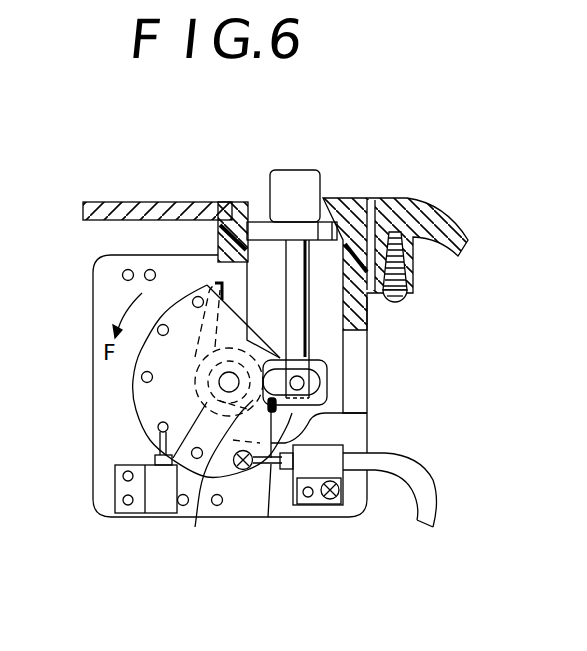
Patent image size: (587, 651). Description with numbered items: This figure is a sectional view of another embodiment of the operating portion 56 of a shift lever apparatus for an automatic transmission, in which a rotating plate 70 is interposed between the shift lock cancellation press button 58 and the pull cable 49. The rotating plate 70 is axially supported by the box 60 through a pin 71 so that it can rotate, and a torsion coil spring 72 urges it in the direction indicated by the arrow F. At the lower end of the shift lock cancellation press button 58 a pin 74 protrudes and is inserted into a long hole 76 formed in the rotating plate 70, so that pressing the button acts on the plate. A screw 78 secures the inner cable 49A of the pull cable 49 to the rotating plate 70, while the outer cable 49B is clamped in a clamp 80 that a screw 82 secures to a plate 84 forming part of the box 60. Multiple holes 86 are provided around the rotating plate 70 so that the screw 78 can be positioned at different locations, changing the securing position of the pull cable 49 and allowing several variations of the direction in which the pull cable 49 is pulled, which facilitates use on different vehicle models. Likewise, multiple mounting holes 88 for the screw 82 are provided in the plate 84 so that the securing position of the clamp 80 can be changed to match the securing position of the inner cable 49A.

The pull cable 49 is at (441, 485).
The inner cable 49A is at (255, 472).
The outer cable 49B is at (407, 485).
The operating portion 56 is at (437, 353).
The shift lock cancellation press button 58 is at (323, 182).
The box 60 is at (218, 237).
The rotating plate 70 is at (126, 420).
The pin 71 is at (160, 465).
The torsion coil spring 72 is at (205, 415).
The pin 74 is at (320, 381).
The long hole 76 is at (300, 357).
The screw 78 is at (247, 472).
The clamp 80 is at (332, 452).
The screw 82 is at (347, 517).
The plate 84 is at (100, 487).
The holes 86 is at (200, 287).
The mounting holes 88 is at (122, 274).